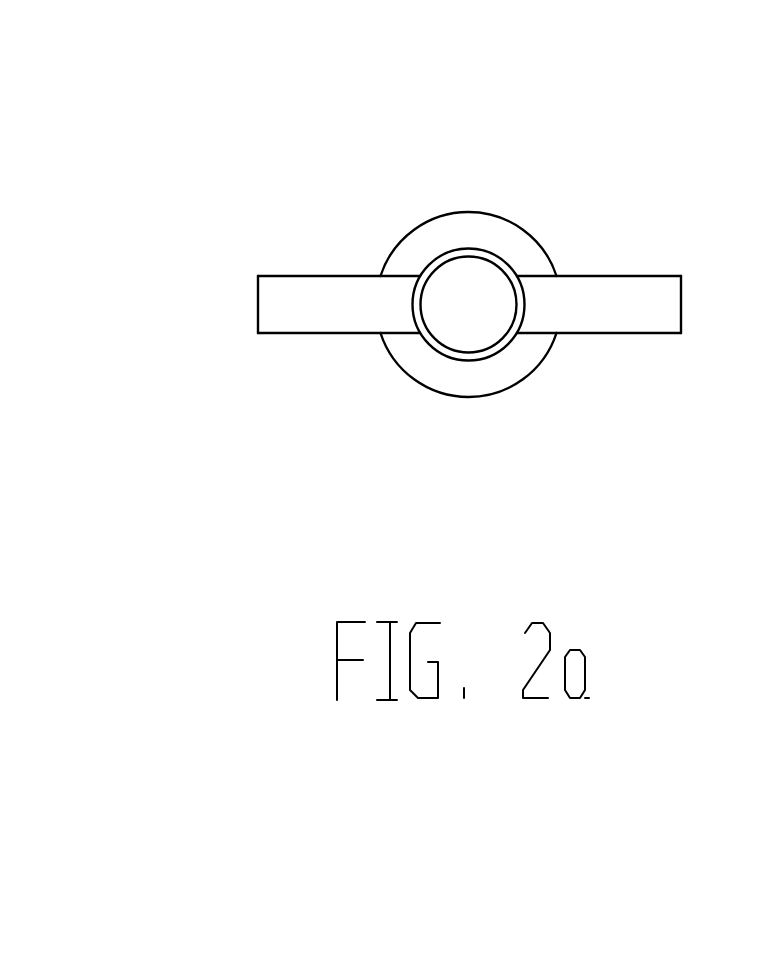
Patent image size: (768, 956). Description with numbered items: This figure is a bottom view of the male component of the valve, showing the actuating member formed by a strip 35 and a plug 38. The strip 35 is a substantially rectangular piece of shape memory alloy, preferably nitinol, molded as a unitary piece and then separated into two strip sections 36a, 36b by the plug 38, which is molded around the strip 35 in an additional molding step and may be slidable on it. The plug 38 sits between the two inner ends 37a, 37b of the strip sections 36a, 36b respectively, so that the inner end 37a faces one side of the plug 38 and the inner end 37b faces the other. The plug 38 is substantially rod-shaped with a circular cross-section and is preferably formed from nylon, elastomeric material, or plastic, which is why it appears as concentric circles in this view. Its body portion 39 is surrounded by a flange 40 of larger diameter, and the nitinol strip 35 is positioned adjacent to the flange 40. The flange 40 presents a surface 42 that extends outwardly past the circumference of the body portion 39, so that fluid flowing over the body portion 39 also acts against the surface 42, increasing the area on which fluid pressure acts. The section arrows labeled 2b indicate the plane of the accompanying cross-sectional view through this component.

The section line 2b- 2b is at (88, 407).
The strip 35 is at (610, 276).
The strip section 36a is at (270, 276).
The strip section 36b is at (718, 452).
The inner end 37a is at (403, 307).
The inner end 37b is at (615, 403).
The plug 38 is at (467, 248).
The body portion 39 is at (495, 252).
The flange 40 is at (507, 530).
The surface 42 is at (370, 503).